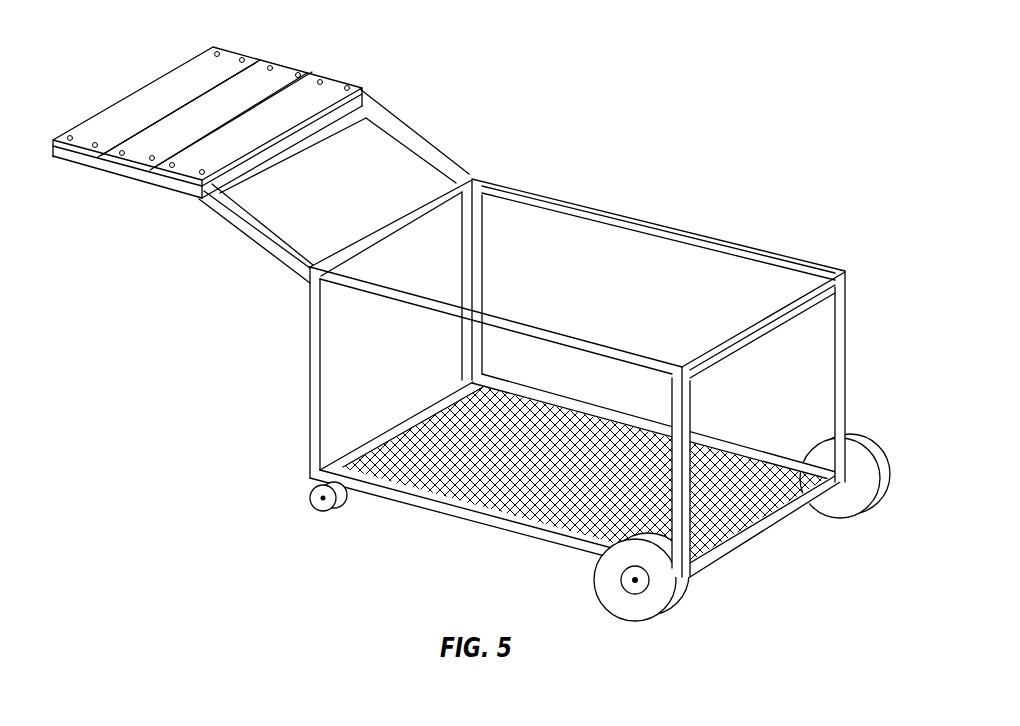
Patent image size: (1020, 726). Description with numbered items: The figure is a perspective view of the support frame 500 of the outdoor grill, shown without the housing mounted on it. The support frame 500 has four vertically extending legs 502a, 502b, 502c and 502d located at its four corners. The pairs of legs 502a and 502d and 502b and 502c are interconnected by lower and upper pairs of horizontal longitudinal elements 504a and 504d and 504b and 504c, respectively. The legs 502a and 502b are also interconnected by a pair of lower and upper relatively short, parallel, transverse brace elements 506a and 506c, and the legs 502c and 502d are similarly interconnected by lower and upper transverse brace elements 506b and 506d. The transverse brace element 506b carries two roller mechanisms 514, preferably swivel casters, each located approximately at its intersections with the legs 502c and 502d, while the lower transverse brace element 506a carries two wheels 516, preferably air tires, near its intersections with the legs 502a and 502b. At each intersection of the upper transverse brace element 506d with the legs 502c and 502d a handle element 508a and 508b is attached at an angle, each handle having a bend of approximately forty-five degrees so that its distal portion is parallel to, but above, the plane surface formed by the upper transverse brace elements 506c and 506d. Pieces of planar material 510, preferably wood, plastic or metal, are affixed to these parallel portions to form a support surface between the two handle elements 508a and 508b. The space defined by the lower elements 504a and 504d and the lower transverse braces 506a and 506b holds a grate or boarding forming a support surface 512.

The support frame 500 is at (748, 68).
The vertically extending leg 502a is at (723, 472).
The vertically extending leg 502b is at (881, 377).
The vertically extending leg 502c is at (430, 280).
The vertically extending leg 502d is at (275, 372).
The lower horizontal longitudinal element 504a is at (499, 524).
The upper horizontal longitudinal element 504b is at (496, 320).
The upper horizontal longitudinal element 504c is at (658, 229).
The lower horizontal longitudinal element 504d is at (656, 427).
The lower transverse brace element 506a is at (765, 526).
The lower transverse brace element 506b is at (401, 421).
The upper transverse brace element 506c is at (751, 325).
The upper transverse brace element 506d is at (391, 226).
The handle element 508a is at (236, 233).
The handle element 508b is at (425, 136).
The planar material 510 is at (209, 122).
The support surface 512 is at (588, 477).
The roller mechanism 514 is at (290, 516).
The wheel 516 is at (652, 594).